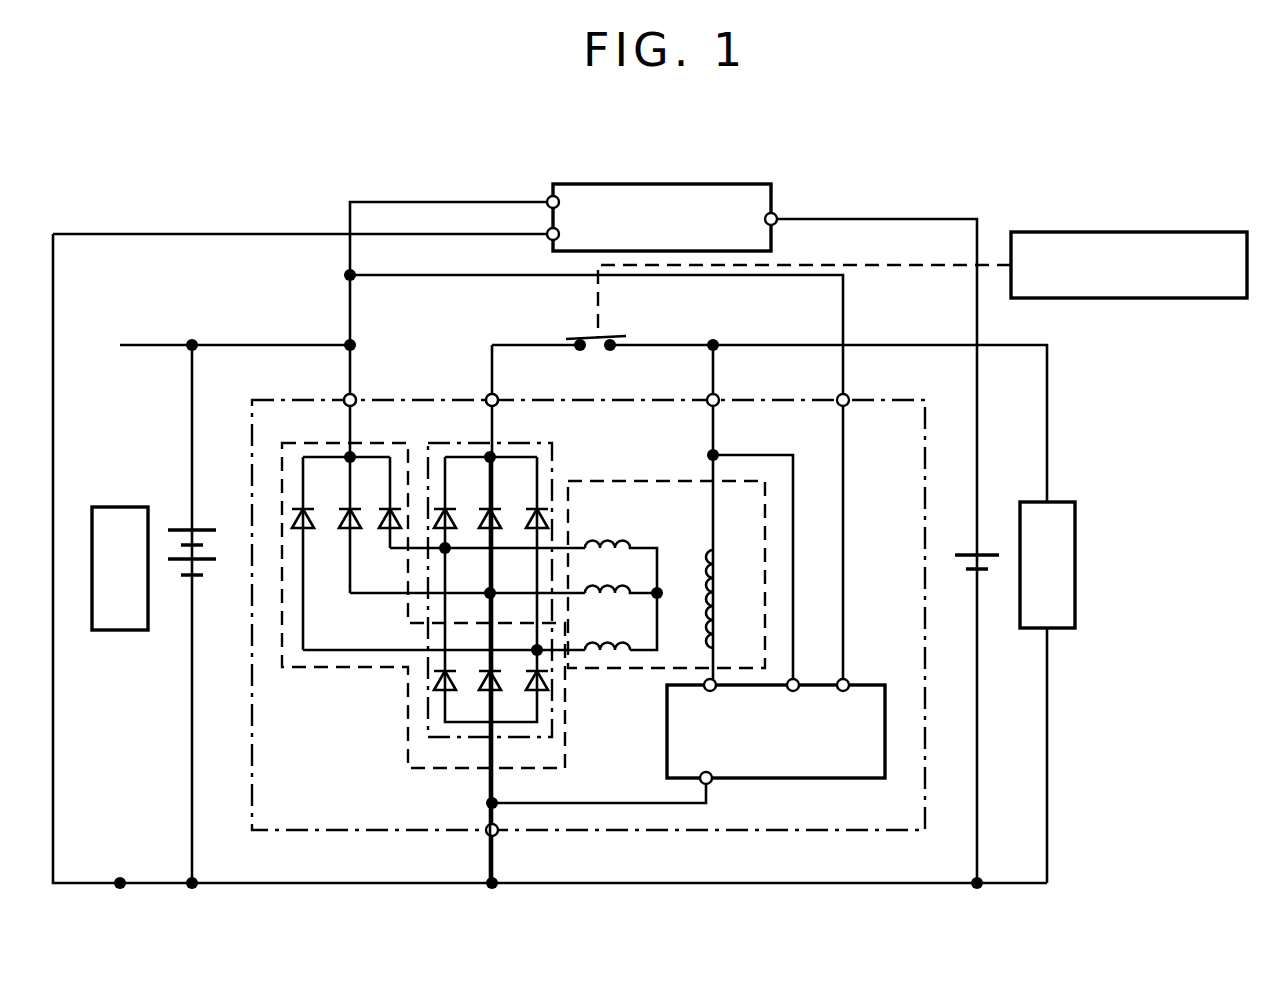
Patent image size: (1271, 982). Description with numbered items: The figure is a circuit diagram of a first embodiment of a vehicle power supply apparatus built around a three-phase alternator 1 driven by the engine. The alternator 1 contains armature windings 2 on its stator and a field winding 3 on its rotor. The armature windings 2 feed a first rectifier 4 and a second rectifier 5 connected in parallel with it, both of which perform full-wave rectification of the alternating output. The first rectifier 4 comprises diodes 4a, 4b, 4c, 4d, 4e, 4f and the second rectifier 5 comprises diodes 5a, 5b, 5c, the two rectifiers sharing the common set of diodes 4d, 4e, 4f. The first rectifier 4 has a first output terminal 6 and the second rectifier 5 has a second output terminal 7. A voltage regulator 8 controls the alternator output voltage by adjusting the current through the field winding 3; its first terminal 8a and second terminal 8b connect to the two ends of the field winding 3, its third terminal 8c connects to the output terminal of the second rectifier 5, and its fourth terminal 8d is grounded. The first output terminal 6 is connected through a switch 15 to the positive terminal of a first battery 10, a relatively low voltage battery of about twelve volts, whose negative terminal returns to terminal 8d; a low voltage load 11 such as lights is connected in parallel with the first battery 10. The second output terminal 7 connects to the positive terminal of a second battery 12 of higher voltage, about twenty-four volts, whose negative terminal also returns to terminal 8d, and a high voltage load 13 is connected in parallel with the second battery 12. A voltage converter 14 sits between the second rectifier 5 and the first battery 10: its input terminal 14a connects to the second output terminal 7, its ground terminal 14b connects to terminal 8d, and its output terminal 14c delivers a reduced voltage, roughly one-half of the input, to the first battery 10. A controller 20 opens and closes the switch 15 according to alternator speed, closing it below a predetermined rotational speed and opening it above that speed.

The alternator 1 is at (622, 480).
The armature windings 2 is at (660, 590).
The field winding 3 is at (720, 600).
The first rectifier 4 is at (483, 645).
The diode 4a is at (452, 518).
The diode 4b is at (497, 518).
The diode 4c is at (534, 532).
The diode 4d is at (440, 692).
The diode 4e is at (495, 694).
The diode 4f is at (542, 692).
The second rectifier 5 is at (423, 588).
The diode 5a is at (305, 572).
The diode 5b is at (347, 535).
The diode 5c is at (388, 533).
The first output terminal 6 is at (498, 398).
The second output terminal 7 is at (355, 398).
The voltage regulator 8 is at (687, 635).
The first terminal 8a is at (712, 678).
The second terminal 8b is at (796, 678).
The third terminal 8c is at (846, 678).
The fourth terminal 8d is at (710, 784).
The first battery 10 is at (980, 548).
The low voltage load 11 is at (1075, 506).
The second battery 12 is at (184, 525).
The high voltage load 13 is at (105, 507).
The voltage converter 14 is at (735, 184).
The input terminal 14a is at (547, 198).
The ground terminal 14b is at (547, 236).
The output terminal 14c is at (778, 215).
The switch 15 is at (612, 338).
The controller 20 is at (1125, 298).